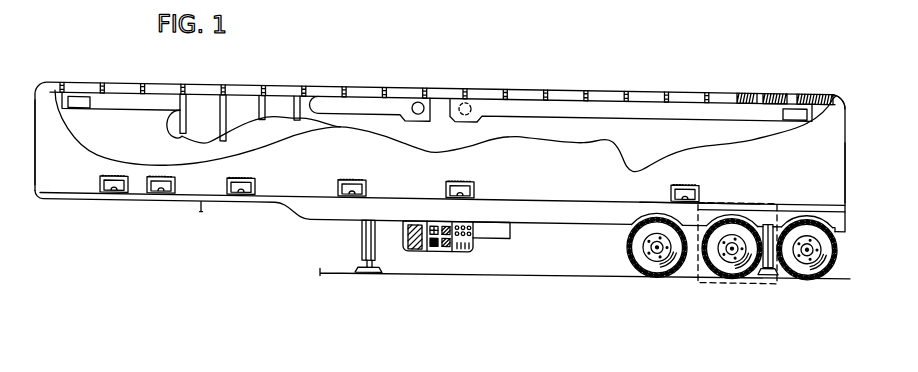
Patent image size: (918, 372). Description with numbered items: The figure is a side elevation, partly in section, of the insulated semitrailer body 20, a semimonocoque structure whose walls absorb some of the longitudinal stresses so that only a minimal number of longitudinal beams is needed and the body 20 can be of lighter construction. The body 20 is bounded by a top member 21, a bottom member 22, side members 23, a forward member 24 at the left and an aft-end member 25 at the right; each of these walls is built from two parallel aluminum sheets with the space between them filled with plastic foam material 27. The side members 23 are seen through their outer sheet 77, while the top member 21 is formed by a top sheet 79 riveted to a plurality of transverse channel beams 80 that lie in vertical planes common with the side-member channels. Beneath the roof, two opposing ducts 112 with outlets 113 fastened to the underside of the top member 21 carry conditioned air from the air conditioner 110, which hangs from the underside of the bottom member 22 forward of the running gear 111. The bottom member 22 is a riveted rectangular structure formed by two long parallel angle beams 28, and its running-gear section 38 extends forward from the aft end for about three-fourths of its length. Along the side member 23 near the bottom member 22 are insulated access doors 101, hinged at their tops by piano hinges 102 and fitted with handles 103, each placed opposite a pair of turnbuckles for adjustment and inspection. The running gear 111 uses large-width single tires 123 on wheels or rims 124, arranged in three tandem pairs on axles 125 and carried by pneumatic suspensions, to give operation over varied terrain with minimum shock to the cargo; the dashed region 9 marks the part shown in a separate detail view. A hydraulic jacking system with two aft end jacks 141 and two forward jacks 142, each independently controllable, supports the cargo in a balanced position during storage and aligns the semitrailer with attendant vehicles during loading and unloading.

The figure nine detail region 9 is at (724, 275).
The insulated body 20 is at (821, 158).
The top member 21 is at (558, 83).
The bottom member 22 is at (290, 201).
The side members 23 is at (824, 172).
The forward member 24 is at (37, 172).
The aft-end member 25 is at (847, 127).
The plastic foam material 27 is at (614, 87).
The angle beams 28 is at (614, 213).
The running-gear section 38 is at (614, 222).
The outer sheet 77 is at (742, 170).
The top sheet 79 is at (410, 82).
The transverse channel beams 80 is at (500, 81).
The insulated access doors 101 is at (347, 181).
The piano hinges 102 is at (460, 174).
The handles 103 is at (473, 182).
The air conditioner 110 is at (437, 246).
The running gear 111 is at (766, 274).
The ducts 112 is at (386, 110).
The outlets 113 is at (81, 107).
The tires 123 is at (638, 260).
The hub 124 is at (653, 243).
The axles 125 is at (660, 244).
The aft end jacks 141 is at (788, 180).
The forward jacks 142 is at (374, 255).